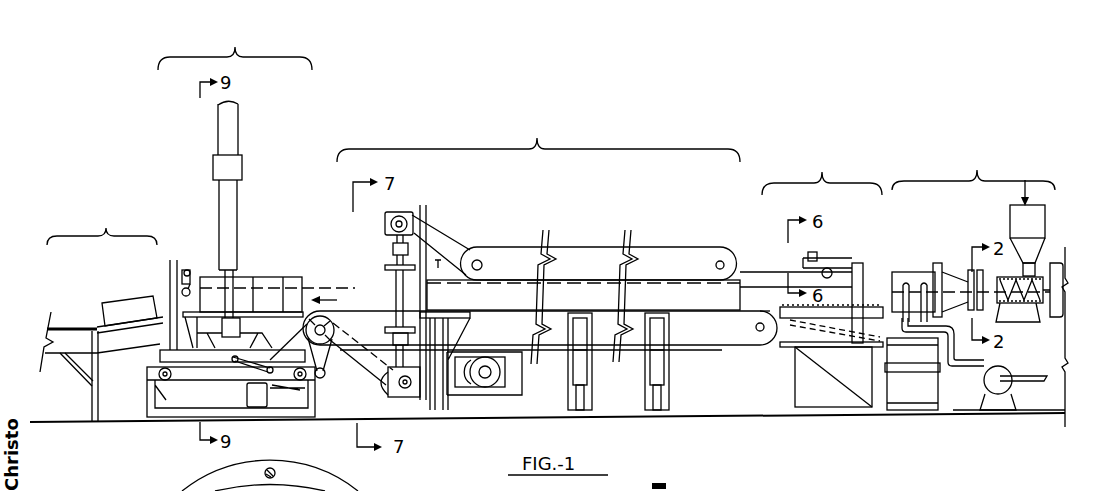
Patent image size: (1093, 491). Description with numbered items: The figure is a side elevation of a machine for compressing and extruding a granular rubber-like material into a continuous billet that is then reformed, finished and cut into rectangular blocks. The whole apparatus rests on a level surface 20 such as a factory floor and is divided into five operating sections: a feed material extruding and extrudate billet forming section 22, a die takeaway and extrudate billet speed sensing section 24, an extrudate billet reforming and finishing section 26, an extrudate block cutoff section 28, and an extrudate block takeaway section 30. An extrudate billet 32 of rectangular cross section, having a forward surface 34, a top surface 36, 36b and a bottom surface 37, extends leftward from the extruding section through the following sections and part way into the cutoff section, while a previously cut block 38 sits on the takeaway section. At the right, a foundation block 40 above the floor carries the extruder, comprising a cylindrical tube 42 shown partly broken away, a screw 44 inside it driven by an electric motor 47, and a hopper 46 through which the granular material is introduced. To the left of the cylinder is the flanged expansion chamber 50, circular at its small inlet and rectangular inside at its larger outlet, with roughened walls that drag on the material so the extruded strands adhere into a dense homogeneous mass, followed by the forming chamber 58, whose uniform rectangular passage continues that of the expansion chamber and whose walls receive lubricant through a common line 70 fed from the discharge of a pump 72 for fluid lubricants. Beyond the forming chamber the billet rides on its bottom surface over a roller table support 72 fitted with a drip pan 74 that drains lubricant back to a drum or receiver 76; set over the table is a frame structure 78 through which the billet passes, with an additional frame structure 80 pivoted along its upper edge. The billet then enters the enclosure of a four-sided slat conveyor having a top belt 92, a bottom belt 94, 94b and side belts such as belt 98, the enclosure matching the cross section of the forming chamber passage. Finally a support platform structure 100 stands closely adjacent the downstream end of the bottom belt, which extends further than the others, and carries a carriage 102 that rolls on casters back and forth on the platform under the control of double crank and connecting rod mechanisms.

The level surface 20 is at (709, 395).
The feed material extruding and extrudate billet forming section 22 is at (973, 168).
The die takeaway and extrudate billet speed sensing section 24 is at (822, 170).
The extrudate billet reforming and finishing section 26 is at (538, 136).
The extrudate block cutoff section 28 is at (235, 45).
The extrudate block takeaway section 30 is at (102, 223).
The extrudate billet 32 is at (354, 268).
The forward surface 34 is at (198, 294).
The top surface 36 is at (340, 290).
The top surface 36b is at (874, 275).
The bottom surface 37 is at (771, 290).
The block 38 is at (115, 305).
The foundation block 40 is at (1048, 373).
The cylindrical tube 42 is at (1012, 278).
The screw 44 is at (1018, 314).
The hopper 46 is at (1040, 233).
The electric motor 47 is at (1046, 320).
The expansion chamber 50 is at (957, 268).
The forming chamber 58 is at (922, 270).
The common line 70 is at (986, 346).
The pump 72 is at (800, 341).
The drip pan 74 is at (893, 325).
The drum or receiver 76 is at (924, 401).
The frame structure 78 is at (866, 291).
The additional frame structure 80 is at (821, 262).
The top conveyor belt 92 is at (666, 233).
The bottom conveyor belt 94 is at (346, 352).
The bottom conveyor belt 94b is at (731, 340).
The side conveyor belt 98 is at (696, 307).
The support platform structure 100 is at (311, 405).
The carriage 102 is at (160, 353).